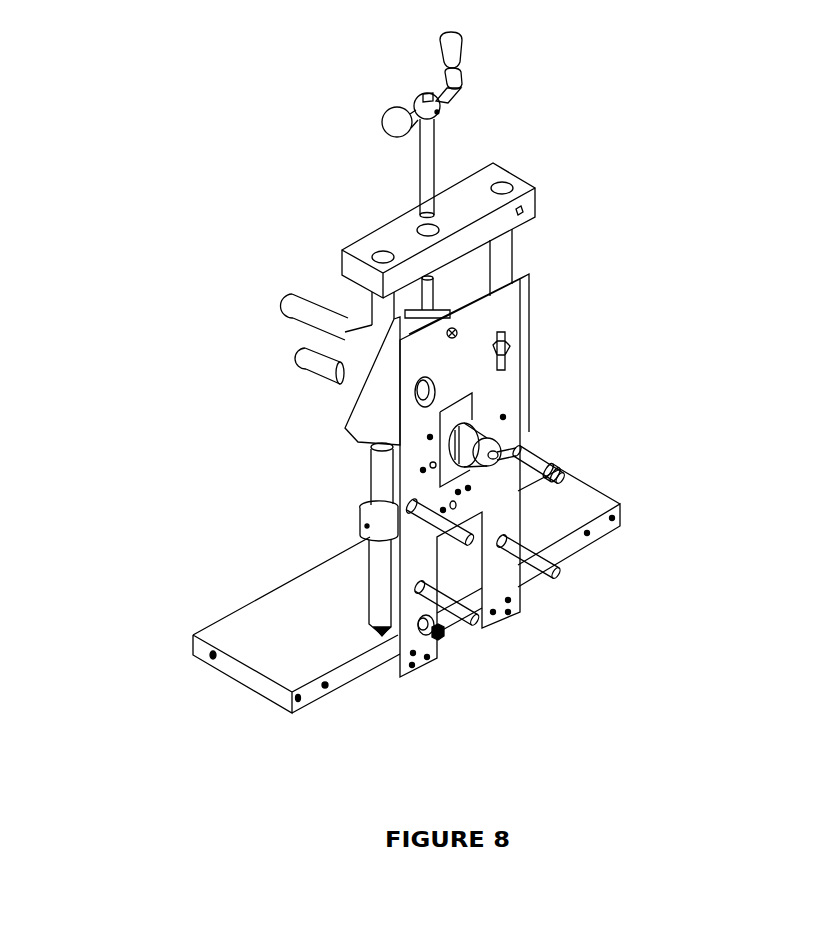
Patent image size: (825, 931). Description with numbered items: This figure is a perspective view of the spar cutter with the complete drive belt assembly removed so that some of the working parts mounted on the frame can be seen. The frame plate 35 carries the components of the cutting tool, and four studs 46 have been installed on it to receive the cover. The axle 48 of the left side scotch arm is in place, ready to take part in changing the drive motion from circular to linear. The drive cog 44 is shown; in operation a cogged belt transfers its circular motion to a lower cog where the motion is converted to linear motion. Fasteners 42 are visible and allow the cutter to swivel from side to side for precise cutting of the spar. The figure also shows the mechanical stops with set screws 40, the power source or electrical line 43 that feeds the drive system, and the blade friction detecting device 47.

The frame plate 35 is at (514, 516).
The mechanical stops with set screws 40 is at (360, 515).
The fasteners 42 is at (455, 332).
The power source (electrical line) 43 is at (303, 337).
The drive cog 44 is at (462, 403).
The studs 46 is at (494, 567).
The blade friction detecting device 47 is at (421, 279).
The axle 48 is at (436, 640).